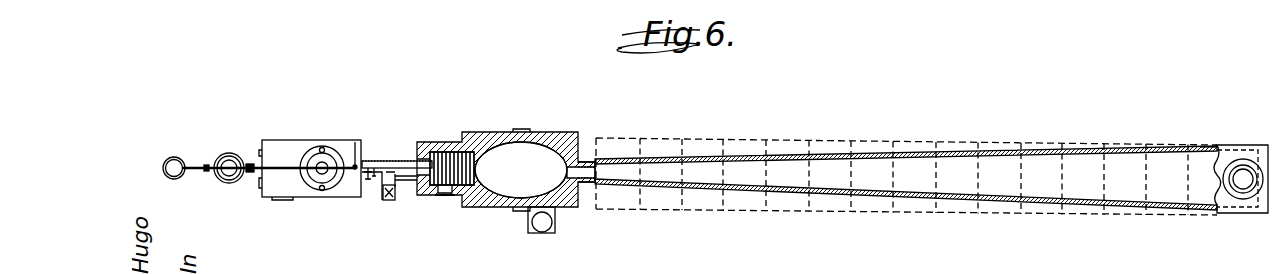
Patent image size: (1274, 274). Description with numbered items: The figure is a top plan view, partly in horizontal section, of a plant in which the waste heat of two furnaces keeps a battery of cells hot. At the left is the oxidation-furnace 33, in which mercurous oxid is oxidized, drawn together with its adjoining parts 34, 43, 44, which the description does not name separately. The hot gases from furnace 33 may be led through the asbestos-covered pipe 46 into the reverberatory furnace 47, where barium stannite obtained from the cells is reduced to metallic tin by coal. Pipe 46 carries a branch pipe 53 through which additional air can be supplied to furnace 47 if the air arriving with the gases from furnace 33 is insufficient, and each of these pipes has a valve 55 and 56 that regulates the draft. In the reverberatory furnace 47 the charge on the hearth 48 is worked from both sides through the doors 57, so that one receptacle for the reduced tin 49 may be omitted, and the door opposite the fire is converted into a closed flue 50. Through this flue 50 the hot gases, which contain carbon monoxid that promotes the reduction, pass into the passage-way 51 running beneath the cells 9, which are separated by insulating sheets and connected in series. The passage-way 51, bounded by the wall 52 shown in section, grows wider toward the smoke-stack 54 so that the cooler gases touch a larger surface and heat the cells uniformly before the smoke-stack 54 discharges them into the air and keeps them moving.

The cells 9 is at (670, 138).
The oxidation-furnace 33 is at (292, 150).
The bearing hub 34 is at (332, 160).
The hand wheel 43 is at (234, 152).
The ring handle 44 is at (179, 156).
The pipe 46 is at (403, 160).
The reverberatory furnace 47 is at (497, 135).
The hearth 48 is at (521, 170).
The receptacle for the reduced tin 49 is at (531, 232).
The closed flue 50 is at (583, 162).
The passage-way 51 is at (740, 190).
The tube wall 52 is at (1042, 148).
The branch pipe 53 is at (383, 198).
The smoke-stack 54 is at (1240, 167).
The valve 55 is at (377, 162).
The valve 56 is at (399, 196).
The doors 57 is at (528, 131).